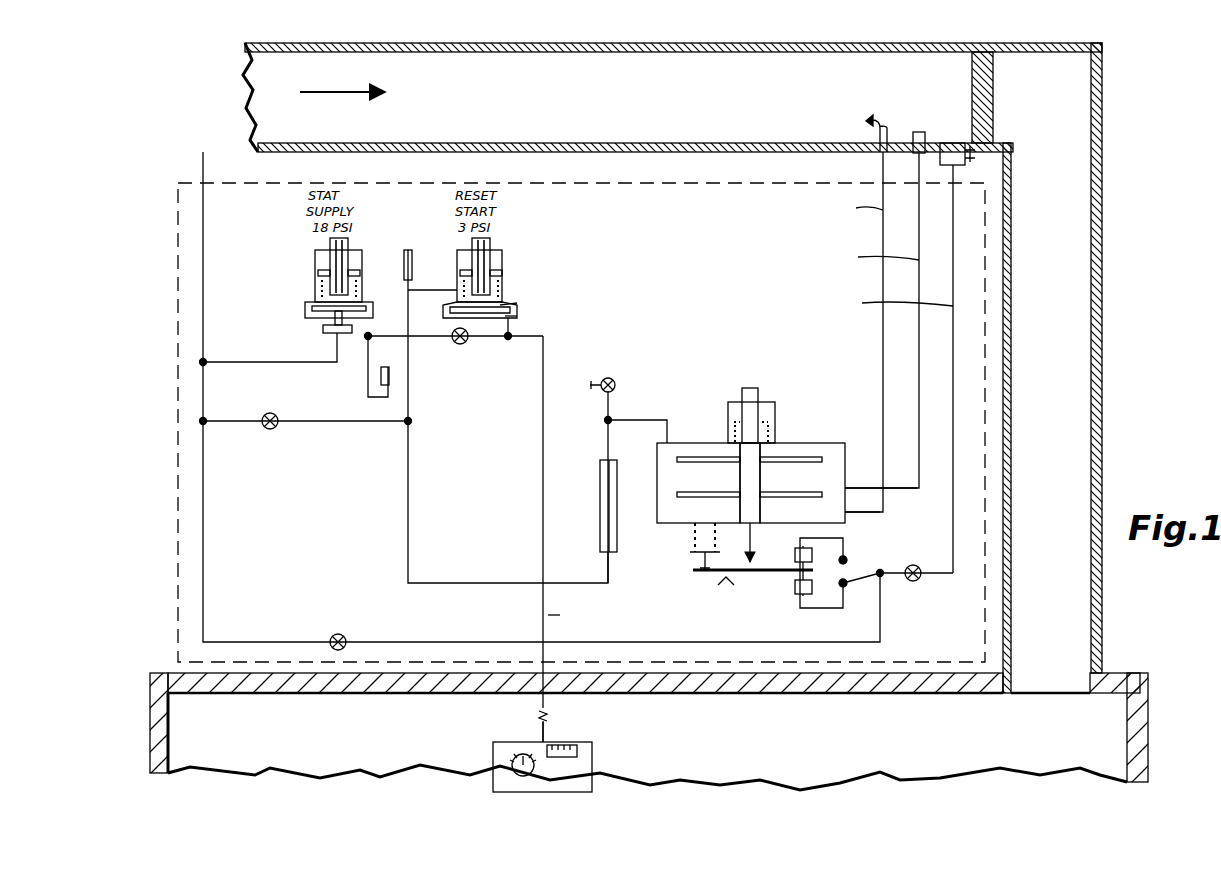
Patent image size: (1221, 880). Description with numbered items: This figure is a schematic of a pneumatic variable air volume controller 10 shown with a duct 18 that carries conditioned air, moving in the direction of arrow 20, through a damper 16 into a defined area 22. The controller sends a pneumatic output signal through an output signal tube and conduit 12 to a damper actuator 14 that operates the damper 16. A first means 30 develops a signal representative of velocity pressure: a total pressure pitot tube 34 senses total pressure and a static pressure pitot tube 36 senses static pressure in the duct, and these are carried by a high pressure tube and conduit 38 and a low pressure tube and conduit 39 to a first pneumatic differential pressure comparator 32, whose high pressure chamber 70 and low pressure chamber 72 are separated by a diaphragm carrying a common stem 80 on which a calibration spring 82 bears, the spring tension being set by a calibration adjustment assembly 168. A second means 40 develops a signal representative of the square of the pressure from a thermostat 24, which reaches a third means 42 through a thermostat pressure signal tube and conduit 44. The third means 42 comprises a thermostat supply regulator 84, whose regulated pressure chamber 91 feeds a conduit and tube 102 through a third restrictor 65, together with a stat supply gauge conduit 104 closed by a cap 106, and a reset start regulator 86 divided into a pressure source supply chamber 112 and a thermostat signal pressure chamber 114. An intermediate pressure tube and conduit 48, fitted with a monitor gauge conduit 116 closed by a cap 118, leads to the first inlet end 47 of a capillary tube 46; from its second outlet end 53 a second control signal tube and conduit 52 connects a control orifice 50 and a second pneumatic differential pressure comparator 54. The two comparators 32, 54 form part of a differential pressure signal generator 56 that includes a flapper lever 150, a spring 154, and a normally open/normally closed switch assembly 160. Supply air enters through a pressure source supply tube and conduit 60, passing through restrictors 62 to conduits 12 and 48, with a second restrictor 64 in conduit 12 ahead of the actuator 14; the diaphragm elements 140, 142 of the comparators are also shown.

The pneumatic variable air volume controller 10 is at (995, 293).
The output signal tube and conduit 12 is at (953, 437).
The damper actuator 14 is at (955, 143).
The damper 16 is at (994, 78).
The duct 18 is at (1102, 160).
The arrow 20 is at (305, 80).
The defined area 22 is at (1105, 722).
The thermostat 24 is at (580, 766).
The first means for developing a first pneumatic pressure control signal 30 is at (652, 518).
The first pneumatic differential pressure comparator 32 is at (855, 517).
The total pressure pitot tube 34 is at (870, 118).
The static pressure pitot tube 36 is at (919, 130).
The high pressure tube and conduit 38 is at (883, 218).
The low pressure tube and conduit 39 is at (919, 283).
The second means for developing a second pneumatic pressure control signal 40 is at (612, 345).
The third means for developing an intermediate pneumatic pressure signal 42 is at (415, 345).
The thermostat pressure signal tube and conduit 44 is at (543, 540).
The capillary tube 46 is at (602, 458).
The first inlet end 47 is at (600, 545).
The intermediate pressure tube and conduit 48 is at (408, 483).
The control orifice 50 is at (615, 380).
The second pneumatic pressure control signal tube and conduit 52 is at (612, 418).
The second outlet end 53 is at (600, 480).
The second pneumatic differential pressure comparator 54 is at (795, 440).
The pneumatic differential pressure signal generator 56 is at (728, 592).
The pneumatic pressure source supply tube and conduit 60 is at (206, 165).
The restrictors 62 is at (272, 412).
The second restrictor 64 is at (905, 582).
The third restrictor 65 is at (465, 343).
The high pressure chamber 70 is at (780, 523).
The low pressure chamber 72 is at (660, 462).
The common stem 80 is at (742, 465).
The calibration spring 82 is at (788, 433).
The thermostat supply regulator 84 is at (312, 257).
The reset start regulator 86 is at (505, 255).
The regulated pressure chamber 91 is at (305, 312).
The conduit and tube 102 is at (370, 333).
The stat supply gauge conduit 104 is at (368, 385).
The stat supply gauge conduit cap 106 is at (389, 375).
The pressure source supply chamber 112 is at (500, 305).
The thermostat signal pressure chamber 114 is at (520, 316).
The monitor gauge conduit 116 is at (415, 280).
The monitor gauge conduit cap 118 is at (408, 250).
The upper diaphragm 140 is at (870, 432).
The lower diaphragm 142 is at (835, 494).
The flapper lever 150 is at (770, 573).
The spring 154 is at (690, 555).
The normally open/normally closed switch assembly 160 is at (862, 612).
The calibration adjustment assembly 168 is at (720, 428).